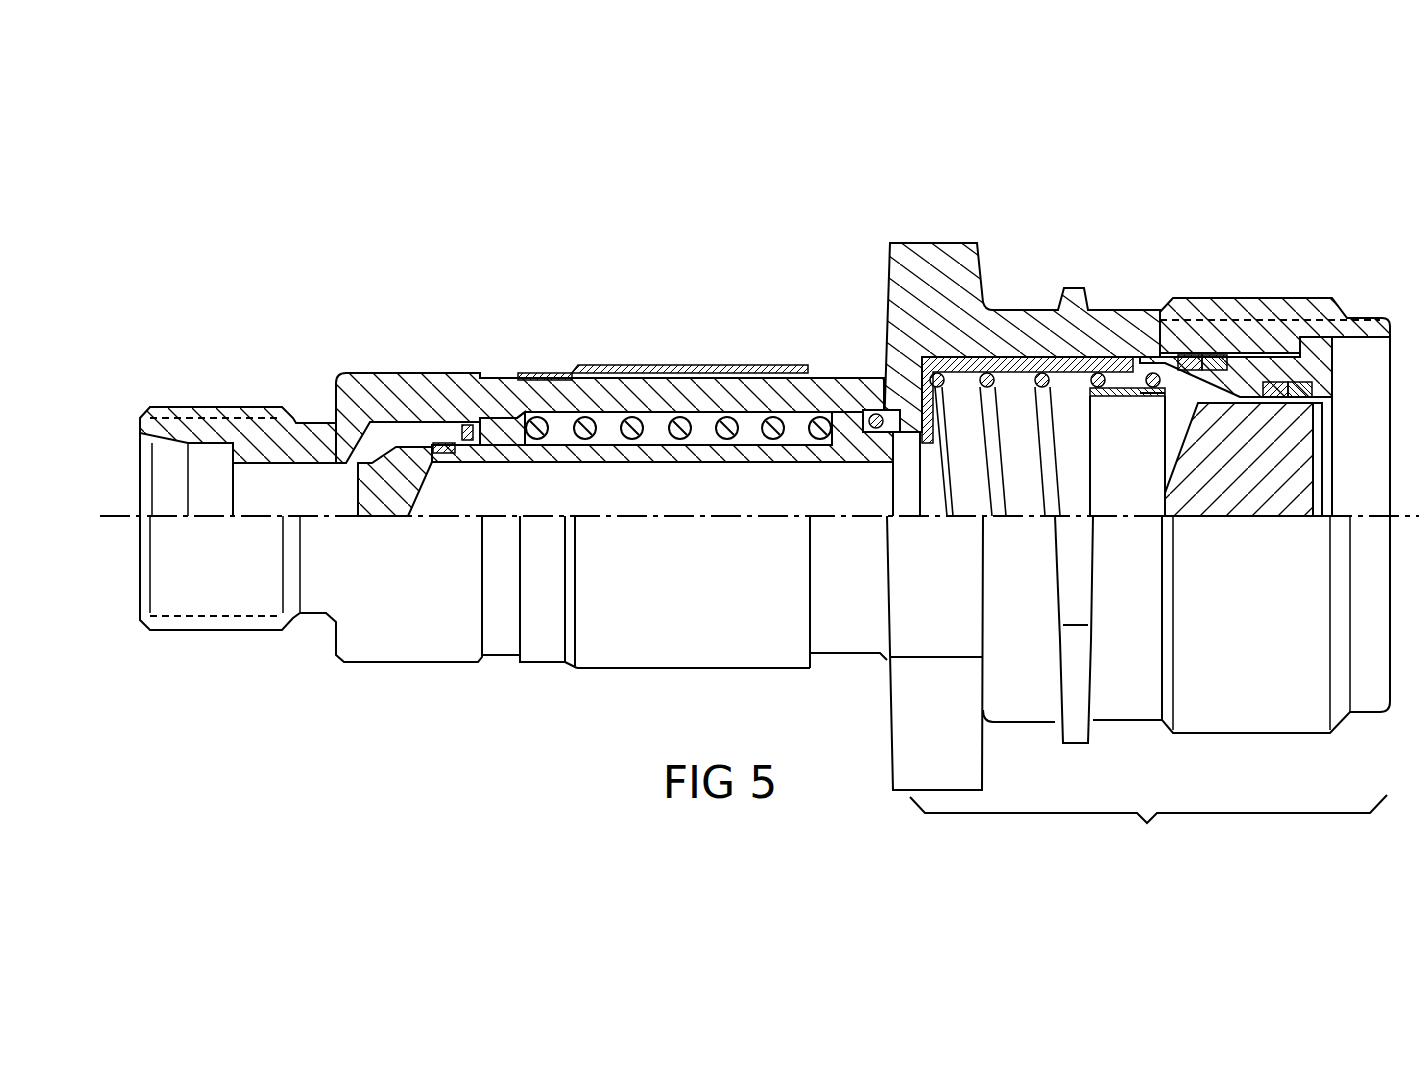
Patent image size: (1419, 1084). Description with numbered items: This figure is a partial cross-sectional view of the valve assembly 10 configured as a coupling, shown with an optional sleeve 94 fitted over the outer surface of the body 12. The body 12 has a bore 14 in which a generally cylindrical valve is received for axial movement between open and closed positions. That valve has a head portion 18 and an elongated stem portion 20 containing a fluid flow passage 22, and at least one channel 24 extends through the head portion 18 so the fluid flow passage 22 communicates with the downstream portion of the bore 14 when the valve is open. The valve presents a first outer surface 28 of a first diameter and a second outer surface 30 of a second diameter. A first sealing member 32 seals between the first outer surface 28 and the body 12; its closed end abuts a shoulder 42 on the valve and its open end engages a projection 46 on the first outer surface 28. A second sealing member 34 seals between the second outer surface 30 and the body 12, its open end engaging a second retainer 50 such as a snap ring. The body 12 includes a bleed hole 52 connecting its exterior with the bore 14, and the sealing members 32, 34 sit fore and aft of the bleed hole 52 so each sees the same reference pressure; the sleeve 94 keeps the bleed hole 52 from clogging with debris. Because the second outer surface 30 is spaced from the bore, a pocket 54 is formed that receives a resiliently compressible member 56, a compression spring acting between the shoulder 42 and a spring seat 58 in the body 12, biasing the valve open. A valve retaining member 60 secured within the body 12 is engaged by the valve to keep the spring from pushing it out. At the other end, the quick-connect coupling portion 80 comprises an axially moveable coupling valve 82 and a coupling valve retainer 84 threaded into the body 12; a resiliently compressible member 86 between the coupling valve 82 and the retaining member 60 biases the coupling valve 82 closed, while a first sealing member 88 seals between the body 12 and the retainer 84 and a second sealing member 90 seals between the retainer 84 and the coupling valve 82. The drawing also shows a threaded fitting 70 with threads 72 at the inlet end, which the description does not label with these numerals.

The valve assembly 10 is at (1150, 211).
The body 12 is at (624, 360).
The bore 14 is at (956, 468).
The head portion 18 is at (337, 408).
The stem portion 20 is at (665, 463).
The fluid flow passage 22 is at (608, 498).
The channel 24 is at (408, 470).
The first outer surface 28 is at (902, 410).
The second outer surface 30 is at (556, 436).
The first sealing member 32 is at (881, 408).
The second sealing member 34 is at (470, 440).
The shoulder 42 is at (866, 410).
The projection 46 is at (914, 431).
The second retainer 50 is at (462, 428).
The bleed hole 52 is at (648, 370).
The pocket 54 is at (706, 417).
The resiliently compressible member 56 is at (772, 398).
The spring seat 58 is at (508, 430).
The valve retaining member 60 is at (893, 405).
The fitting 70 is at (223, 406).
The threads 72 is at (142, 433).
The quick-connect coupling portion 80 is at (1148, 624).
The coupling valve 82 is at (1130, 385).
The coupling valve retainer 84 is at (1321, 340).
The resiliently compressible member 86 is at (1040, 374).
The first sealing member 88 is at (1195, 354).
The second sealing member 90 is at (1276, 381).
The sleeve 94 is at (607, 365).